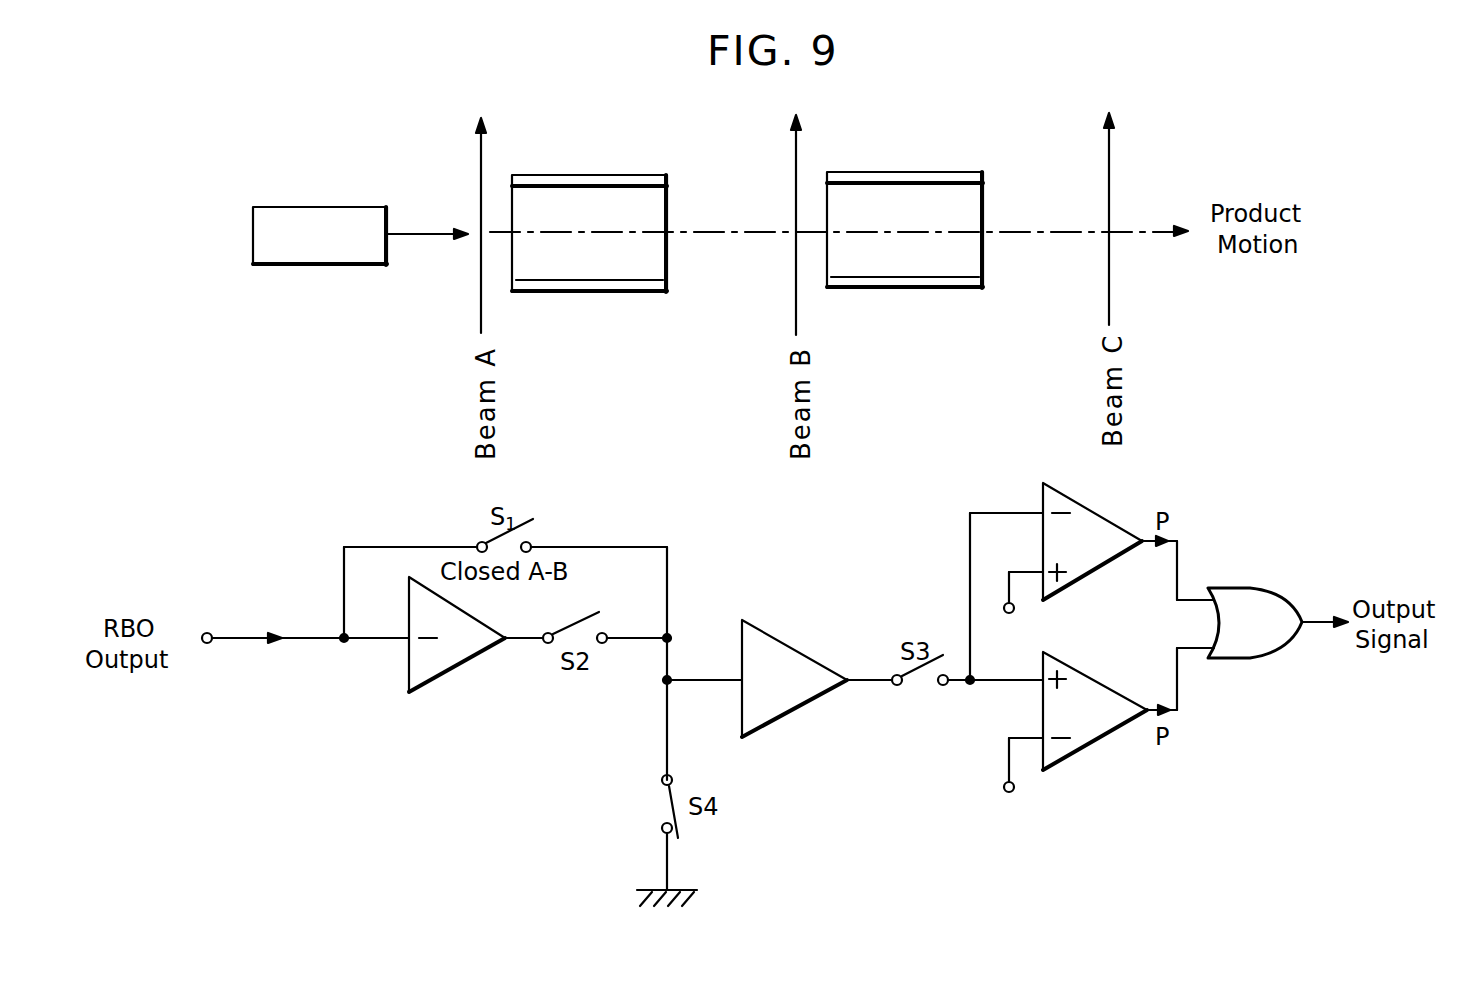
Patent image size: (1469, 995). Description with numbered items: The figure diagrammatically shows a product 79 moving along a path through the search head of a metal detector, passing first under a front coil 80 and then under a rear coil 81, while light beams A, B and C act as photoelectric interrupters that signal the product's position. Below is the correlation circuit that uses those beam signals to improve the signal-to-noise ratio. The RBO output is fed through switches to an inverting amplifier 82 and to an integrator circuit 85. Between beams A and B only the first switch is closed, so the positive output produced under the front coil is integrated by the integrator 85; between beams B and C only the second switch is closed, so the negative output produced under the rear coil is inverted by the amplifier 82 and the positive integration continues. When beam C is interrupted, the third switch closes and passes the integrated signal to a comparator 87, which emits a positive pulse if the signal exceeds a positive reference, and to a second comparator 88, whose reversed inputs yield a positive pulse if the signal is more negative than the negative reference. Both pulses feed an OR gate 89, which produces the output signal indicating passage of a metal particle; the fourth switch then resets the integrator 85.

The product 79 is at (322, 214).
The front coil 80 is at (606, 178).
The rear coil 81 is at (908, 175).
The amplifier 82 is at (455, 657).
The integrator circuit 85 is at (782, 642).
The comparator 87 is at (1092, 690).
The comparator 88 is at (1096, 517).
The OR gate 89 is at (1254, 600).